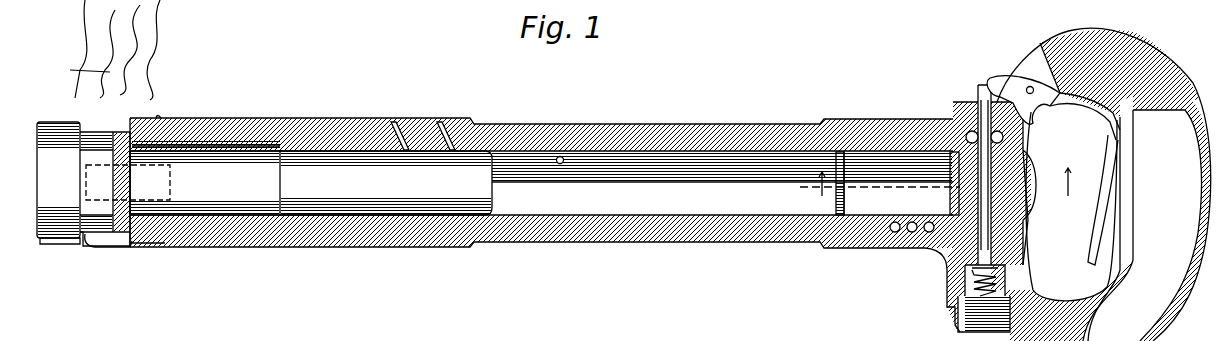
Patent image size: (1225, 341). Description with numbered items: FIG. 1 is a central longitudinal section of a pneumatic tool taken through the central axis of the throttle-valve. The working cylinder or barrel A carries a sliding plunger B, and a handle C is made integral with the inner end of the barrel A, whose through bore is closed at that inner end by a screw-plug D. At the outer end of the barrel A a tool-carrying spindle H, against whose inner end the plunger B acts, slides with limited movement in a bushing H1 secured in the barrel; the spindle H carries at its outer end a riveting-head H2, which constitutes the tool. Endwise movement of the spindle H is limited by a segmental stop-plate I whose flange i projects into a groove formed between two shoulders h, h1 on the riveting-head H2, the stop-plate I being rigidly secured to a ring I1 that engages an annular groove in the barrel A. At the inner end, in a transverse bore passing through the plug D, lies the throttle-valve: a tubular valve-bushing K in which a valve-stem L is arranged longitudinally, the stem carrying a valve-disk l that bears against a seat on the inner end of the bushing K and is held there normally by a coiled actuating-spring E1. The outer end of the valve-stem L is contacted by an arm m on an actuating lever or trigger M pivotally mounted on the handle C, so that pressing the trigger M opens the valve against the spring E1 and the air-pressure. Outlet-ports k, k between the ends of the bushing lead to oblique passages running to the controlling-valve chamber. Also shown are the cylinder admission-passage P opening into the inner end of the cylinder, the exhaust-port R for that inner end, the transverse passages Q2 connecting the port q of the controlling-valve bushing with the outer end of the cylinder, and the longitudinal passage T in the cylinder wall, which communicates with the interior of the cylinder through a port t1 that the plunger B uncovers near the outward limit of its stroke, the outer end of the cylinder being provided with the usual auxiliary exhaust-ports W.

The working cylinder or barrel A is at (612, 170).
The riveting-head H2 is at (612, 170).
The tool-carrying spindle H is at (612, 171).
The bushing H1 is at (228, 147).
The sliding plunger B is at (612, 171).
The auxiliary exhaust-ports W is at (394, 121).
The port t1 is at (562, 157).
The port q is at (942, 183).
The exhaust-port R is at (612, 171).
The cylinder admission-passage P is at (940, 186).
The transverse passages Q2 is at (895, 233).
The longitudinal passage T is at (957, 318).
The flange i is at (976, 96).
The outlet-ports k is at (966, 132).
The valve-stem L is at (987, 82).
The arm m is at (1041, 89).
The actuating lever or trigger M is at (1085, 122).
The tubular valve-bushing K is at (1034, 165).
The screw-plug D is at (1018, 220).
The valve-disk l is at (1035, 245).
The coiled actuating-spring E1 is at (1030, 270).
The handle C is at (612, 170).
The shoulder h is at (74, 240).
The shoulder h1 is at (118, 234).
The stop-plate I is at (98, 247).
The ring I1 is at (150, 246).